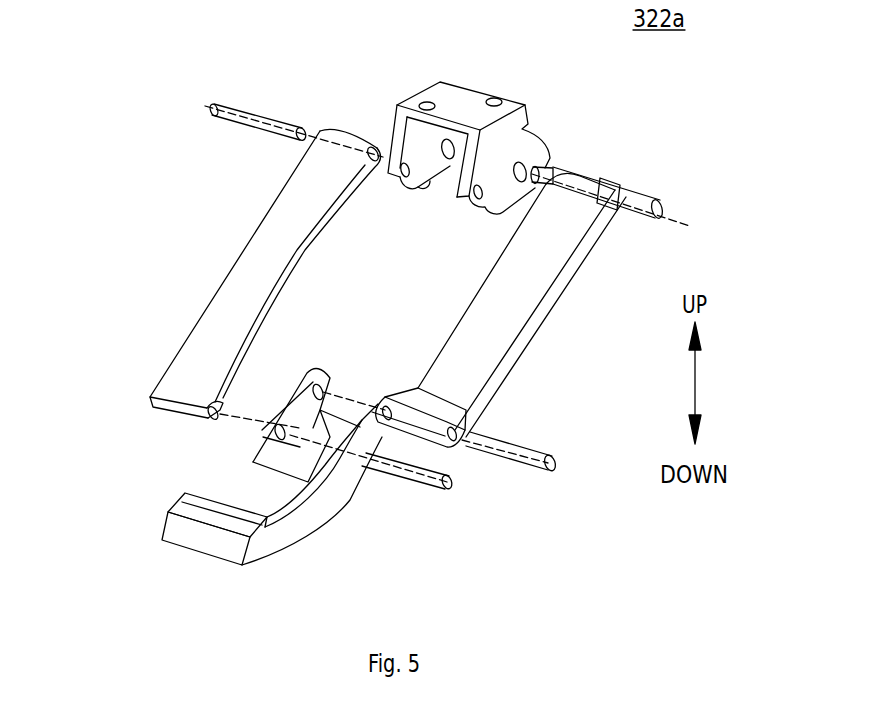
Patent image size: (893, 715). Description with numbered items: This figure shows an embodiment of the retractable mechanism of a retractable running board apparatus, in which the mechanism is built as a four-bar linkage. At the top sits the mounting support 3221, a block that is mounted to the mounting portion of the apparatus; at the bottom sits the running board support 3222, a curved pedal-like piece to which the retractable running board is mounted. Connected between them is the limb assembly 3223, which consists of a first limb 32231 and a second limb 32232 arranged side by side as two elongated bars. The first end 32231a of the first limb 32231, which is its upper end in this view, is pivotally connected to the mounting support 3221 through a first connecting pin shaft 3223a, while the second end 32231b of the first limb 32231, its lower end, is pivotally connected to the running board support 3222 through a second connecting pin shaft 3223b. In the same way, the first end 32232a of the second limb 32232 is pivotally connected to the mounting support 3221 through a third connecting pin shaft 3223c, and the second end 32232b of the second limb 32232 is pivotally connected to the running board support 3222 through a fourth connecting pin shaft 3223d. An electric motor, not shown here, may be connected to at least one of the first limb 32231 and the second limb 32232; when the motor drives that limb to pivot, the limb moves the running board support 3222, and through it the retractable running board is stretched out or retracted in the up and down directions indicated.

The mounting support 3221 is at (440, 96).
The running board support 3222 is at (273, 543).
The limb assembly 3223 is at (222, 235).
The first connecting pin shaft 3223a is at (648, 207).
The second connecting pin shaft 3223b is at (508, 460).
The third connecting pin shaft 3223c is at (270, 117).
The fourth connecting pin shaft 3223d is at (407, 477).
The first limb 32231 is at (548, 275).
The first end of the first limb 32231a is at (600, 176).
The second end of the first limb 32231b is at (425, 408).
The second limb 32232 is at (197, 333).
The first end of the second limb 32232a is at (348, 130).
The second end of the second limb 32232b is at (173, 412).